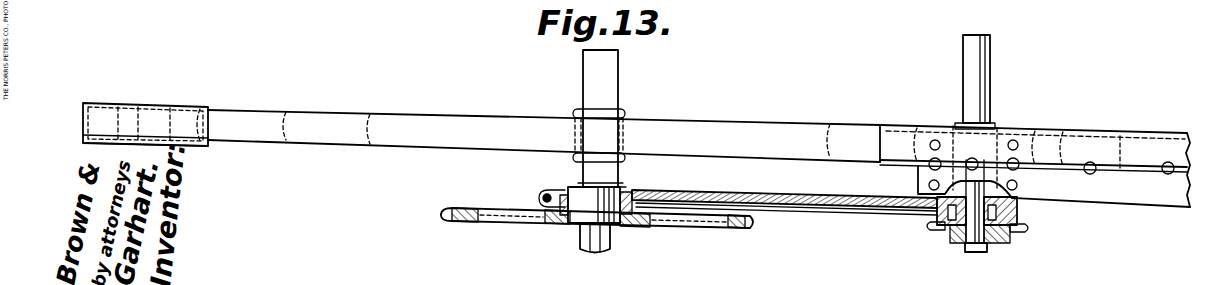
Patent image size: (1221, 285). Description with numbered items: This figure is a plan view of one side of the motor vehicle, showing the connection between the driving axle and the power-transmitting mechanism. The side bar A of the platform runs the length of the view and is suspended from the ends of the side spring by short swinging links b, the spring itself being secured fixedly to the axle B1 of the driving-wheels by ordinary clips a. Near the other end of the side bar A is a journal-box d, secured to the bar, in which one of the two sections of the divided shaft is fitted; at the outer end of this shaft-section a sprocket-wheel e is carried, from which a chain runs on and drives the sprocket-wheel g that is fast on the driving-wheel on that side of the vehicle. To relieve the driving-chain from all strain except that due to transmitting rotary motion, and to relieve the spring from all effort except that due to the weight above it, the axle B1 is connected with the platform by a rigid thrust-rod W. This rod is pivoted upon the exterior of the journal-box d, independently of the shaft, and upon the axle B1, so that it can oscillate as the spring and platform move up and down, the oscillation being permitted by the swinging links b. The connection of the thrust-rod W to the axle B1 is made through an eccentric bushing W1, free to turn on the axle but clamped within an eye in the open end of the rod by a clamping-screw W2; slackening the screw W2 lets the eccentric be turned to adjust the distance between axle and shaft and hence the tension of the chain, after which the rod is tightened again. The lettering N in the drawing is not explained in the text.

The side bar A is at (120, 106).
The swinging link b is at (135, 139).
The tubular rail N is at (544, 136).
The axle B1 is at (599, 118).
The clip a is at (612, 118).
The eccentric bushing W1 is at (585, 190).
The clamping-screw W2 is at (541, 202).
The sprocket-wheel g is at (470, 221).
The thrust-rod W is at (808, 212).
The journal-box d is at (937, 195).
The sprocket-wheel e is at (1012, 236).